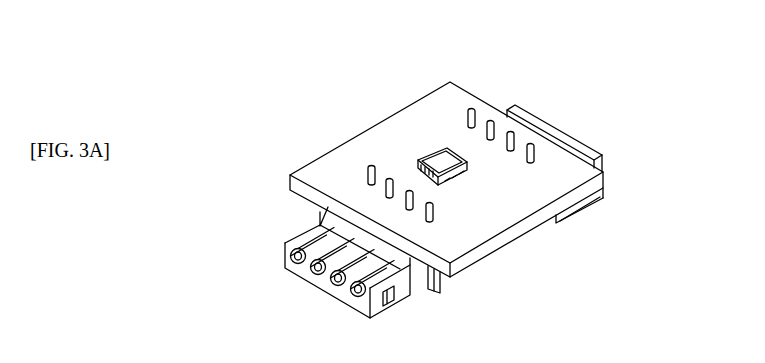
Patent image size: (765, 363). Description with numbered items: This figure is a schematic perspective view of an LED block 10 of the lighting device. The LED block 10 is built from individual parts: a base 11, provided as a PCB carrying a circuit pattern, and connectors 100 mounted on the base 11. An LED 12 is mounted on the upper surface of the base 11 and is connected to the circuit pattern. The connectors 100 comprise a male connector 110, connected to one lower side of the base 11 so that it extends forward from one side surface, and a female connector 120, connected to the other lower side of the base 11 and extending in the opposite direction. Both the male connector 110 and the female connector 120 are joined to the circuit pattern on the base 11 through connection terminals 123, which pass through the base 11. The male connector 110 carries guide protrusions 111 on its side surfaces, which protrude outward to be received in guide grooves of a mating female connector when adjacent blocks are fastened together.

The LED block 10 is at (407, 66).
The base 11 is at (503, 213).
The LED 12 is at (436, 161).
The guide protrusion 111 is at (397, 303).
The connection terminal 123 is at (368, 166).
The connector 100 is at (438, 208).
The male connector 110 is at (342, 296).
The female connector 120 is at (578, 112).